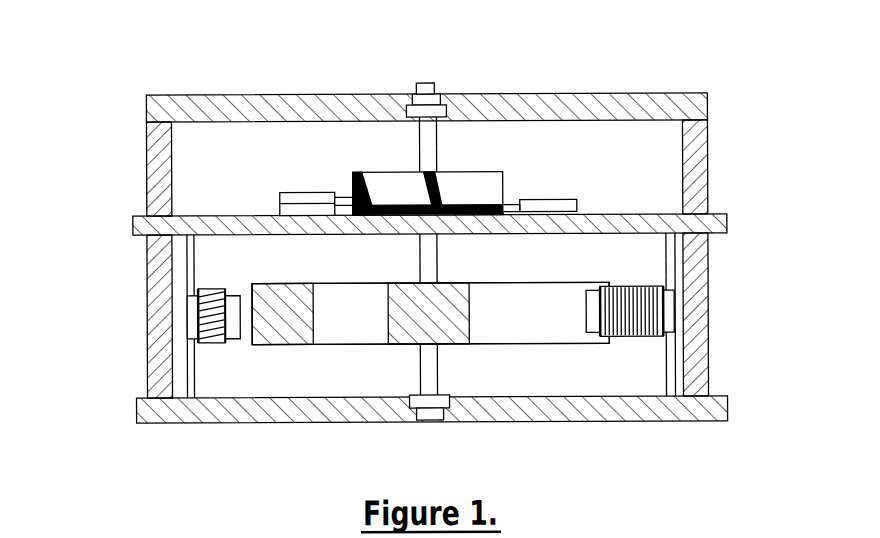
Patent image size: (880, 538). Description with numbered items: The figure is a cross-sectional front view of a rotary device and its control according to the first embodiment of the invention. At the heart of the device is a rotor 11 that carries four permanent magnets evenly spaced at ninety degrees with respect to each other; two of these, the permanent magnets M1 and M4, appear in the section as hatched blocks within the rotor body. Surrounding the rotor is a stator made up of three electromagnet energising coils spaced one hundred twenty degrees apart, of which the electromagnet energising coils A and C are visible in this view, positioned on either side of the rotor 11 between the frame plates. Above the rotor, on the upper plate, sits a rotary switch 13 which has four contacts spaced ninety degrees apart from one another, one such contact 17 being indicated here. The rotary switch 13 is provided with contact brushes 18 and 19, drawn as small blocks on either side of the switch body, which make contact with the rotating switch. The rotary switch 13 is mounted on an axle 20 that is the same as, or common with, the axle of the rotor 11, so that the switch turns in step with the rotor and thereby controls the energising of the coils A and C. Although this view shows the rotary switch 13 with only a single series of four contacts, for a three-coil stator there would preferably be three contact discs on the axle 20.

The rotor 11 is at (512, 347).
The rotary switch 13 is at (503, 172).
The contact 17 is at (277, 295).
The contact brush 18 is at (292, 195).
The contact brush 19 is at (577, 200).
The axle 20 is at (417, 85).
The electromagnet energising coil A is at (212, 343).
The electromagnet energising coil C is at (663, 335).
The permanent magnet M1 is at (262, 345).
The permanent magnet M4 is at (397, 345).